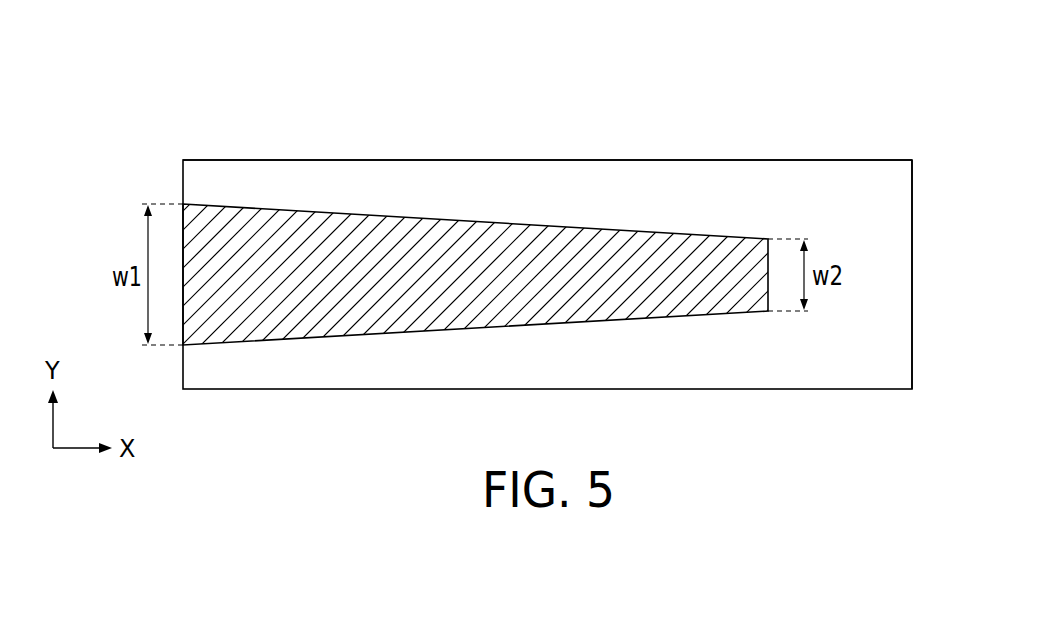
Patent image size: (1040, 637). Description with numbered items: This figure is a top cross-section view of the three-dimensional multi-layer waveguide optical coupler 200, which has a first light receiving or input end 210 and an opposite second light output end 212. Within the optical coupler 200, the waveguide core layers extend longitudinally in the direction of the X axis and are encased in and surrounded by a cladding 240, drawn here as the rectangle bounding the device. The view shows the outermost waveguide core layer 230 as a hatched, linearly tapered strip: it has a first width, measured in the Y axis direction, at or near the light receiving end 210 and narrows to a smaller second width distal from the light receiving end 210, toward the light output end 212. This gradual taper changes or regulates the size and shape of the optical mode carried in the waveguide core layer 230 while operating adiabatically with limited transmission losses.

The optical coupler 200 is at (86, 58).
The light receiving end 210 is at (183, 182).
The light output end 212 is at (913, 275).
The waveguide core layer 230 is at (425, 237).
The cladding 240 is at (638, 172).